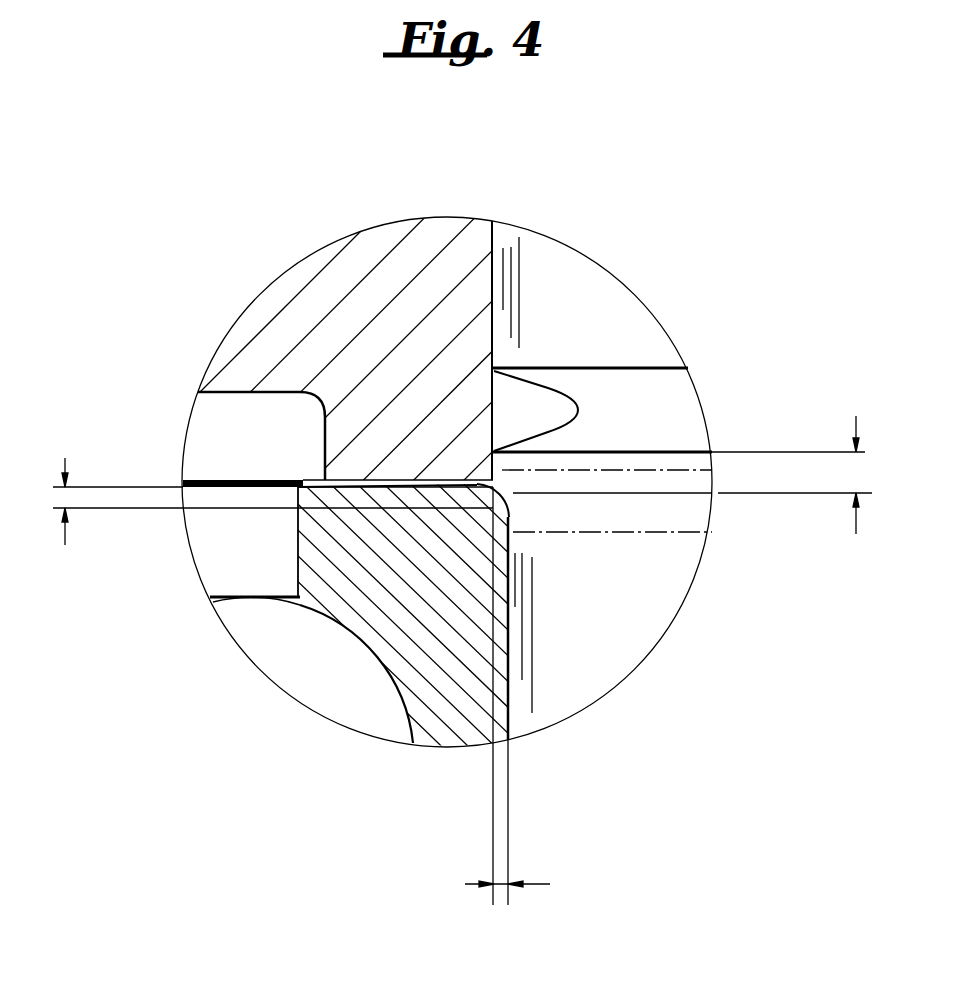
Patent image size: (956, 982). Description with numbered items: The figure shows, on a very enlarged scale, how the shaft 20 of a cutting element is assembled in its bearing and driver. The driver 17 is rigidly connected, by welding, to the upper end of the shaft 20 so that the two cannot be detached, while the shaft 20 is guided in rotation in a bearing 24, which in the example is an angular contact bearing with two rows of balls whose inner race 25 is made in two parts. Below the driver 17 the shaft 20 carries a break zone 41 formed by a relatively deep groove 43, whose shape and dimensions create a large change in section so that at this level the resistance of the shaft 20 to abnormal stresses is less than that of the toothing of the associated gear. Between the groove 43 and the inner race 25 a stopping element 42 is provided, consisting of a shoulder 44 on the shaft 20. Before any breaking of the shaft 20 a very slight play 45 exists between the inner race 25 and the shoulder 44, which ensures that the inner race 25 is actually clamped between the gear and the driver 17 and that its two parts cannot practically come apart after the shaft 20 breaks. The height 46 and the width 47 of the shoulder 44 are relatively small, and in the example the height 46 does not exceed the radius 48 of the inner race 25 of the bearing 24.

The driver 17 is at (258, 310).
The shaft 20 is at (588, 273).
The bearing 24 is at (275, 667).
The inner race 25 is at (442, 728).
The break zone 41 is at (582, 367).
The stopping element 42 is at (697, 443).
The groove 43 is at (579, 410).
The shoulder 44 is at (618, 462).
The play 45 is at (65, 462).
The height 46 is at (538, 880).
The width 47 is at (856, 523).
The radius 48 is at (507, 512).